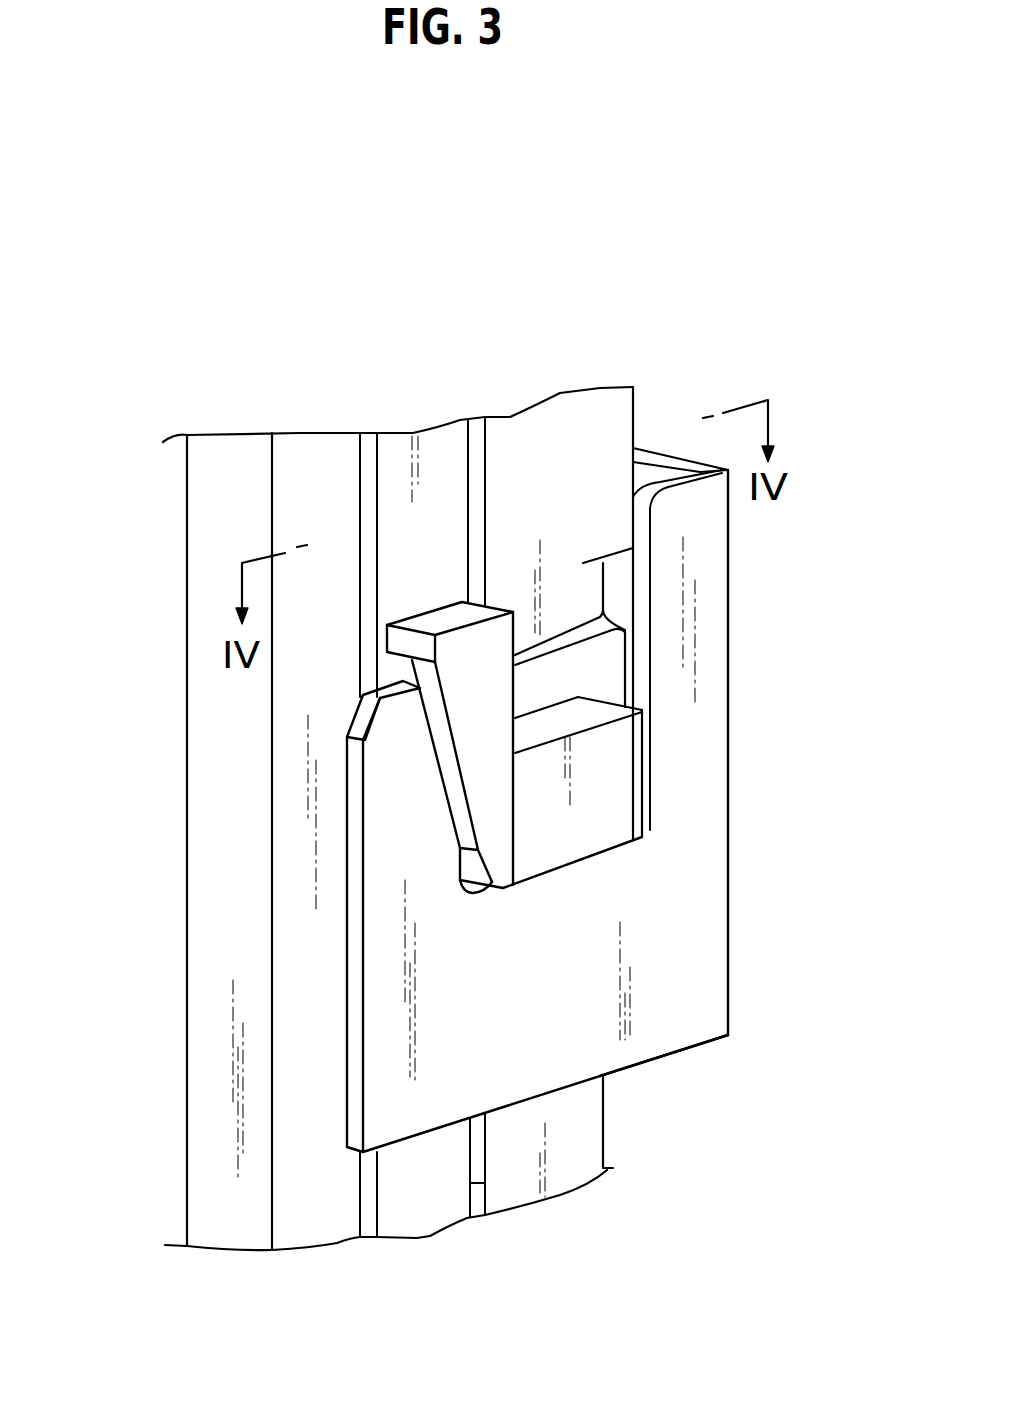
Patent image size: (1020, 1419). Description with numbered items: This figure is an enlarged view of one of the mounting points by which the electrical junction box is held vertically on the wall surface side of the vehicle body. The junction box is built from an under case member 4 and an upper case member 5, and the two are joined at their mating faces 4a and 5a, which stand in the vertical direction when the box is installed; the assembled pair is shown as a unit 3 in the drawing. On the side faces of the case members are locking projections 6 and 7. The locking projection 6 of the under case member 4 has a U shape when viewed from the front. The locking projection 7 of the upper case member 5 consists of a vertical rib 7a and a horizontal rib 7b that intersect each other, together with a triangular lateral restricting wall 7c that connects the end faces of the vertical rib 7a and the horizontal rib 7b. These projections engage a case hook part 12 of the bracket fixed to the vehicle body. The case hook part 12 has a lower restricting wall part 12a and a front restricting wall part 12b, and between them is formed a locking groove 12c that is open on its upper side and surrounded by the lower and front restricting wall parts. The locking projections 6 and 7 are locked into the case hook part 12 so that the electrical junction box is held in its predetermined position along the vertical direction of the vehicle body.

The pillar garnish assembly 3 is at (485, 278).
The under case member 4 is at (523, 445).
The mating face of the under case member 4a is at (467, 1153).
The upper case member 5 is at (298, 452).
The mating face of the upper case member 5a is at (480, 1183).
The locking projection 6 is at (613, 768).
The locking projection 7 is at (482, 686).
The vertical rib 7a is at (478, 863).
The horizontal rib 7b is at (403, 642).
The lateral restricting wall 7c is at (490, 760).
The case hook part 12 is at (733, 983).
The lower restricting wall part 12a is at (665, 995).
The front restricting wall part 12b is at (393, 788).
The locking groove 12c is at (567, 863).